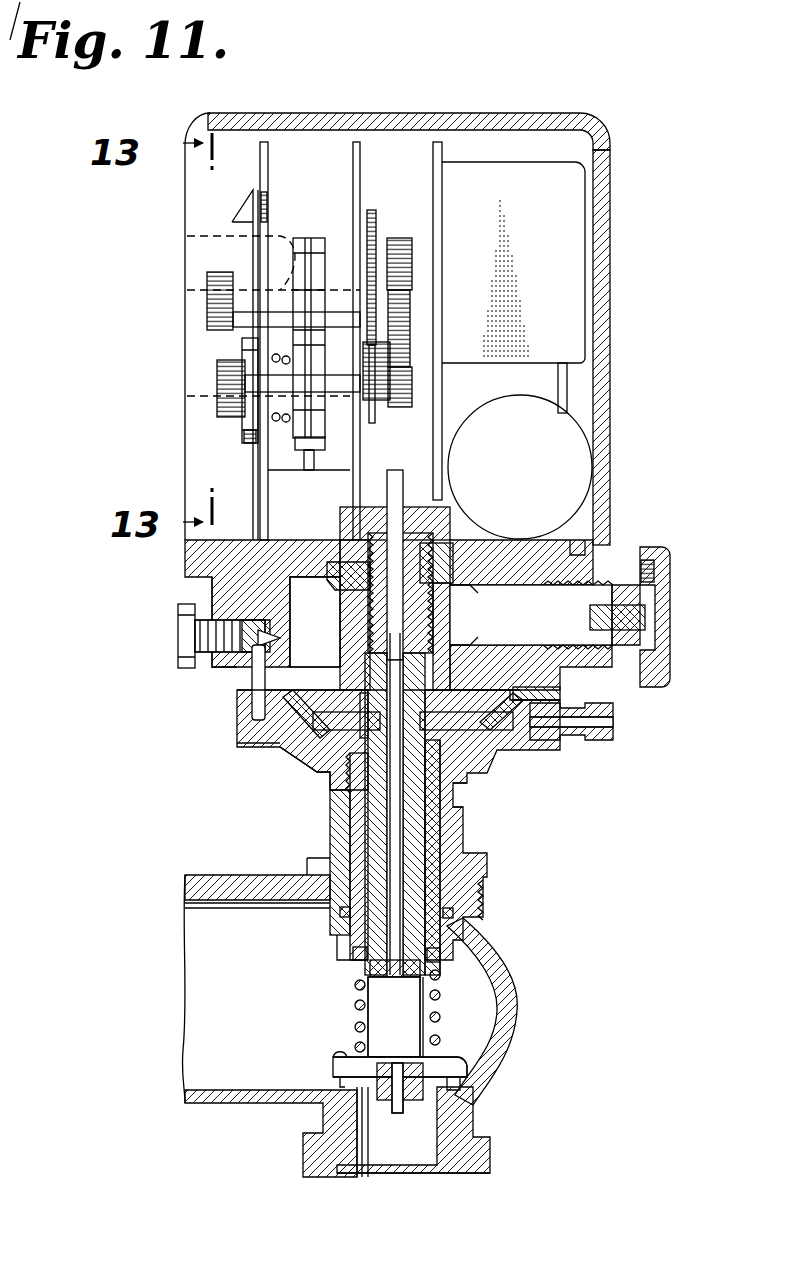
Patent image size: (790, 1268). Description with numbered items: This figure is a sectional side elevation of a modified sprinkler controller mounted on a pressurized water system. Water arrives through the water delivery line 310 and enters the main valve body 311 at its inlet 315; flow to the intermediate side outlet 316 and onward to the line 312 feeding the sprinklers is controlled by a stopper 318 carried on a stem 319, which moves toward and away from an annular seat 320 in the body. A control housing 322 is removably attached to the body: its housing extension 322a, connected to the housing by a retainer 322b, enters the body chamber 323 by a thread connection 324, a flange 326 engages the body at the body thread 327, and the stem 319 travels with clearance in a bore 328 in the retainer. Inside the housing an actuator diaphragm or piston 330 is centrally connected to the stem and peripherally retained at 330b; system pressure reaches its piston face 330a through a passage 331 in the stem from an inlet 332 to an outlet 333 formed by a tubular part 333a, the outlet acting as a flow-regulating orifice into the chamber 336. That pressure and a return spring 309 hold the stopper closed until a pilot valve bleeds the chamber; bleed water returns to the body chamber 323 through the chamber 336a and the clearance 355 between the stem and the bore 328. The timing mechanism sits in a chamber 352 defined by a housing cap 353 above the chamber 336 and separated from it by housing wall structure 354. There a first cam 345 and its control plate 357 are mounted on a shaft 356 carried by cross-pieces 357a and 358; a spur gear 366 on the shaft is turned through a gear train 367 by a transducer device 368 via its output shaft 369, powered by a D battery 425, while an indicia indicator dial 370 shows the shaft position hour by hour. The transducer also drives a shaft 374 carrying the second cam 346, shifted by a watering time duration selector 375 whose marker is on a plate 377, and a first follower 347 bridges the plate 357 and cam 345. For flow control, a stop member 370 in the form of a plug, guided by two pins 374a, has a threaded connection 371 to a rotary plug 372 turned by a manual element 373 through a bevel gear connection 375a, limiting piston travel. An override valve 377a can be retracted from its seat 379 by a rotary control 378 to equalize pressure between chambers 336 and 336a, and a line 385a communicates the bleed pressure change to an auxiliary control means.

The chamber 352 is at (512, 142).
The housing cap 353 is at (610, 160).
The housing wall structure 354 is at (570, 543).
The clearance 355 is at (487, 770).
The shaft 356 is at (232, 236).
The control plate 357 is at (315, 238).
The cross-piece 357a is at (264, 140).
The cross piece 358 is at (356, 140).
The first rotary cam 345 is at (298, 238).
The second rotary cam 346 is at (290, 427).
The first follower 347 is at (317, 440).
The spur gear 366 is at (380, 225).
The gear train 367 is at (418, 316).
The transducer device 368 is at (568, 330).
The output shaft 369 is at (418, 263).
The indicia indicator dial 370 is at (238, 259).
The threaded connection 371 is at (337, 572).
The rotary plug 372 is at (447, 597).
The manual element 373 is at (665, 622).
The shaft 374 is at (247, 345).
The pins 374a is at (422, 497).
The watering time duration selector 375 is at (245, 375).
The bevel gear connection 375a is at (453, 567).
The plate 377 is at (252, 443).
The override valve 377a is at (267, 632).
The rotary control 378 is at (178, 650).
The seat 379 is at (263, 648).
The line 385a is at (613, 722).
The D battery 425 is at (520, 467).
The chamber 336 is at (320, 622).
The chamber 336a is at (300, 752).
The actuator diaphragm or piston 330 is at (450, 698).
The piston face 330a is at (303, 690).
The peripheral retention 330b is at (560, 682).
The outlet 333 is at (405, 693).
The tubular part 333a is at (385, 700).
The control housing 322 is at (222, 714).
The housing extension 322a is at (463, 857).
The retainer 322b is at (453, 812).
The bore 328 is at (360, 822).
The flange 326 is at (317, 853).
The body thread 327 is at (310, 868).
The passage 331 is at (457, 791).
The stem 319 is at (440, 835).
The thread connection 324 is at (465, 895).
The main valve body 311 is at (525, 948).
The line 312 is at (148, 963).
The body chamber 323 is at (256, 989).
The return spring 309 is at (430, 992).
The annular seat 320 is at (337, 1062).
The stopper 318 is at (460, 1082).
The intermediate side outlet 316 is at (208, 1097).
The inlet 332 is at (387, 1100).
The inlet 315 is at (433, 1173).
The water delivery line 310 is at (400, 1145).